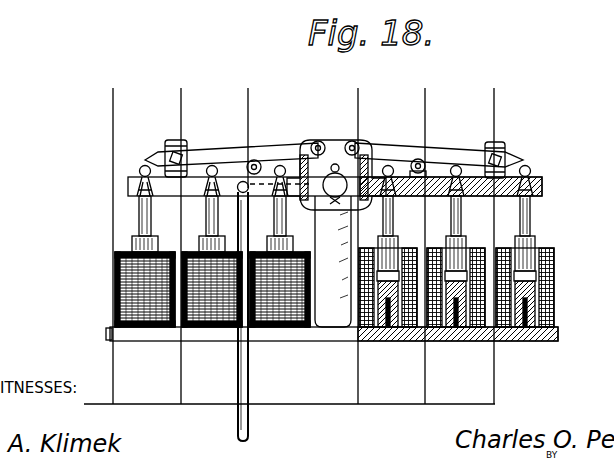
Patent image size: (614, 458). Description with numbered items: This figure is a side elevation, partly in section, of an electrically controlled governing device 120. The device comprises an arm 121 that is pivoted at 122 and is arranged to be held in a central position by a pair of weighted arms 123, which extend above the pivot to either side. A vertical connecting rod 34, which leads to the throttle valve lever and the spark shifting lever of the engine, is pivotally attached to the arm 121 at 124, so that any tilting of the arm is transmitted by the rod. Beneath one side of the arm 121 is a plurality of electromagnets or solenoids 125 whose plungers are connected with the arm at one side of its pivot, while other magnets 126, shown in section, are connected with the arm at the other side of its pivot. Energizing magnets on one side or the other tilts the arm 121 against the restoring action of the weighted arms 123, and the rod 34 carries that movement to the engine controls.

The electrically controlled governing device 120 is at (138, 93).
The arm 121 is at (172, 185).
The pivot 122 is at (358, 152).
The weighted arms 123 is at (272, 153).
The pivotal attachment 124 is at (247, 182).
The electromagnets or solenoids 125 is at (133, 300).
The magnets 126 is at (427, 340).
The vertical connecting rod 34 is at (246, 428).